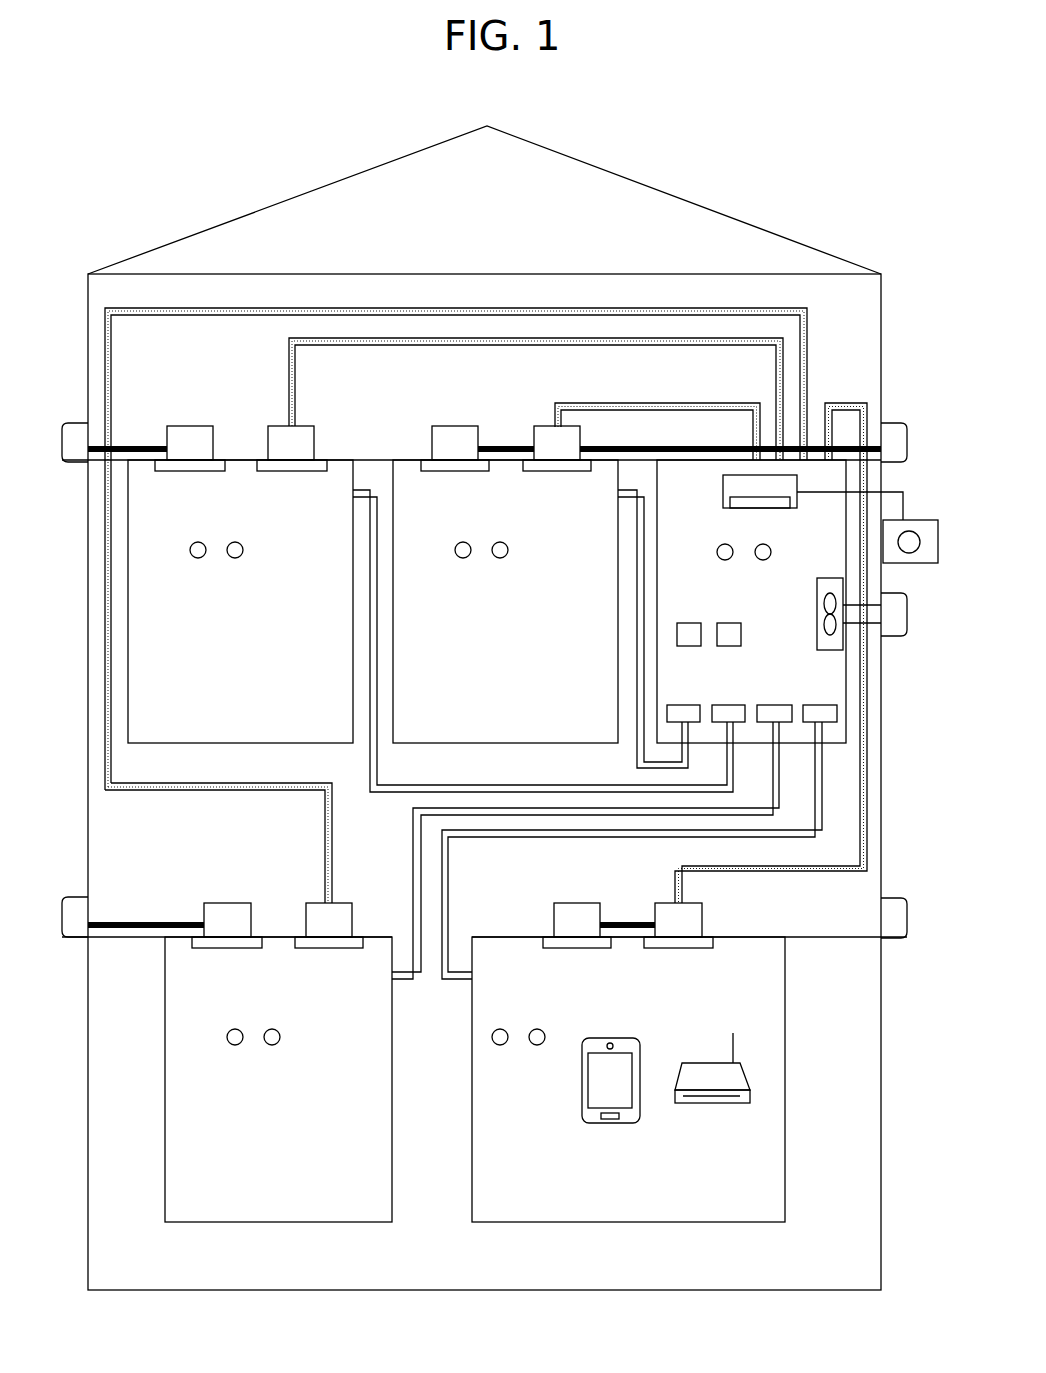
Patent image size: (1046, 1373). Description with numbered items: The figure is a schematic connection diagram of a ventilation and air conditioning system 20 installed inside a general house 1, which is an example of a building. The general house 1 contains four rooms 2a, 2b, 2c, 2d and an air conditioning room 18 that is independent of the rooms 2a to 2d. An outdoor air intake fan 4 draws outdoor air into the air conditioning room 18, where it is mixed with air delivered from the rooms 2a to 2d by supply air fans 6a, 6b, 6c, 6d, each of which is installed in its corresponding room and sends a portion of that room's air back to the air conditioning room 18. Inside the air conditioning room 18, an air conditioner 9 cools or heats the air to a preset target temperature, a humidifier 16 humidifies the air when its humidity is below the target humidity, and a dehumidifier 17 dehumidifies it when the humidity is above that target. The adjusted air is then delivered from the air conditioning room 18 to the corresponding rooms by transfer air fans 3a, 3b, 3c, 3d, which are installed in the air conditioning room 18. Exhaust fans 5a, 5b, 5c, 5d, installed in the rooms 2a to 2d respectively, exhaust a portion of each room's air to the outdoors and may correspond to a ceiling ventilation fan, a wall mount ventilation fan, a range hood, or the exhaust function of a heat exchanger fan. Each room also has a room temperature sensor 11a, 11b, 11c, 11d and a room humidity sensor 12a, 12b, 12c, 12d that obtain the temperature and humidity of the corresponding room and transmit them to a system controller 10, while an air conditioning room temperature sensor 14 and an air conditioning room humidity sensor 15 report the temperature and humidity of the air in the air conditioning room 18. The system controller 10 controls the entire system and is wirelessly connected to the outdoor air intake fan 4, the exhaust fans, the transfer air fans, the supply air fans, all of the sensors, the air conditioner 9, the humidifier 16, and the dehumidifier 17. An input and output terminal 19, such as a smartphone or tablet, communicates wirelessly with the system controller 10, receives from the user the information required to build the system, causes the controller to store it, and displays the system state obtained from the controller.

The general house 1 is at (285, 228).
The ventilation and air conditioning system 20 is at (775, 186).
The room 2a is at (546, 1208).
The room 2b is at (348, 1208).
The room 2c is at (338, 468).
The room 2d is at (407, 470).
The transfer air fan 3a is at (814, 705).
The transfer air fan 3b is at (769, 705).
The transfer air fan 3c is at (724, 705).
The transfer air fan 3d is at (679, 705).
The outdoor air intake fan 4 is at (832, 580).
The exhaust fan 5a is at (575, 913).
The exhaust fan 5b is at (227, 913).
The exhaust fan 5c is at (180, 437).
The exhaust fan 5d is at (464, 437).
The supply air fan 6a is at (668, 913).
The supply air fan 6b is at (320, 913).
The supply air fan 6c is at (280, 437).
The supply air fan 6d is at (545, 437).
The air conditioner 9 is at (735, 488).
The system controller 10 is at (697, 1072).
The room temperature sensor 11a is at (537, 1045).
The room temperature sensor 11b is at (272, 1045).
The room temperature sensor 11c is at (235, 558).
The room temperature sensor 11d is at (500, 558).
The room humidity sensor 12a is at (500, 1045).
The room humidity sensor 12b is at (235, 1045).
The room humidity sensor 12c is at (198, 558).
The room humidity sensor 12d is at (463, 558).
The air conditioning room temperature sensor 14 is at (718, 548).
The air conditioning room humidity sensor 15 is at (763, 560).
The humidifier 16 is at (692, 632).
The dehumidifier 17 is at (733, 632).
The air conditioning room 18 is at (835, 735).
The input and output terminal 19 is at (622, 1040).